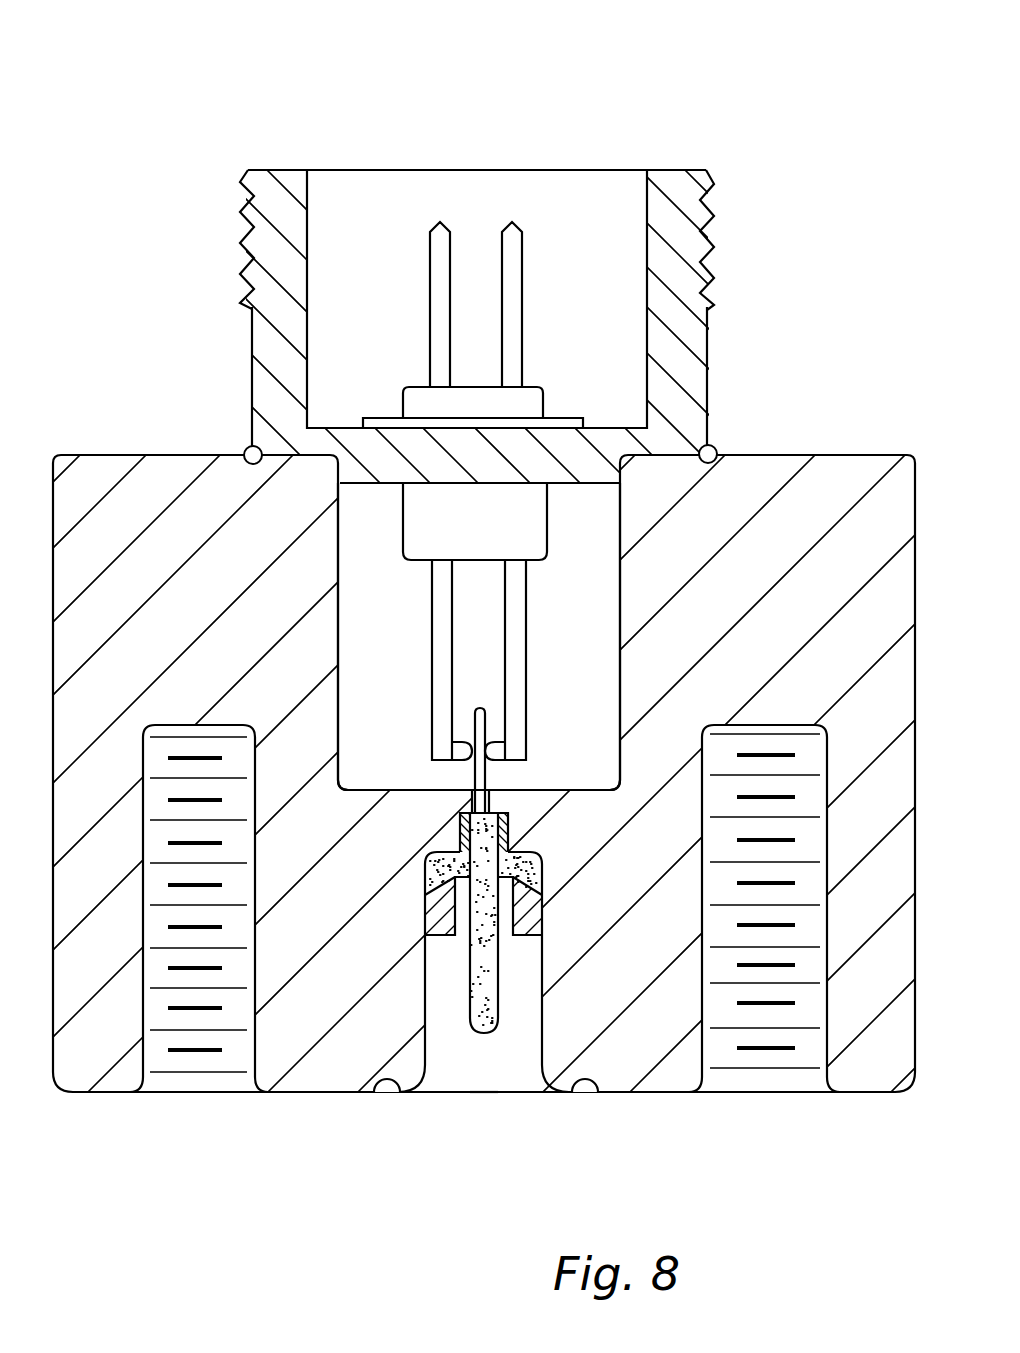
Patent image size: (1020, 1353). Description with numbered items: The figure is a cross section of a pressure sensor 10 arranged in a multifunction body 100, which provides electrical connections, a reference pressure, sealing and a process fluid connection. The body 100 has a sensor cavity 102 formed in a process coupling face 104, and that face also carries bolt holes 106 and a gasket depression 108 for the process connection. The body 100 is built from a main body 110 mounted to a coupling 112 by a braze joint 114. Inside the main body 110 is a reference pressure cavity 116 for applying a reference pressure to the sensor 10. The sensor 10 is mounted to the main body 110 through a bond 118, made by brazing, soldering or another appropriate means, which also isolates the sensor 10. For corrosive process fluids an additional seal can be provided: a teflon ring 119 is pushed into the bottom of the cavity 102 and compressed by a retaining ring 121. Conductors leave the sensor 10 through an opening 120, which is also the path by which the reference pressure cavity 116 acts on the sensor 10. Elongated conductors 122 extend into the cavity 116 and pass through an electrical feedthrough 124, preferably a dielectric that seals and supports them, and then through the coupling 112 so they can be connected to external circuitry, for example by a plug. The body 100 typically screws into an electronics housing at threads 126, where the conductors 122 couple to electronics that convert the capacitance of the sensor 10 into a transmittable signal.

The multifunction body 100 is at (510, 676).
The pressure sensor 10 is at (478, 1040).
The sensor cavity 102 is at (518, 1055).
The process coupling face 104 is at (643, 1093).
The bolt holes 106 is at (203, 1085).
The gasket depression 108 is at (386, 1094).
The main body 110 is at (822, 455).
The coupling 112 is at (712, 332).
The braze joint 114 is at (729, 426).
The reference pressure cavity 116 is at (584, 657).
The bond 118 is at (452, 812).
The teflon ring 119 is at (513, 852).
The opening 120 is at (488, 787).
The retaining ring 121 is at (528, 920).
The elongated conductors 122 is at (508, 295).
The electrical feedthrough 124 is at (427, 525).
The threads 126 is at (713, 212).